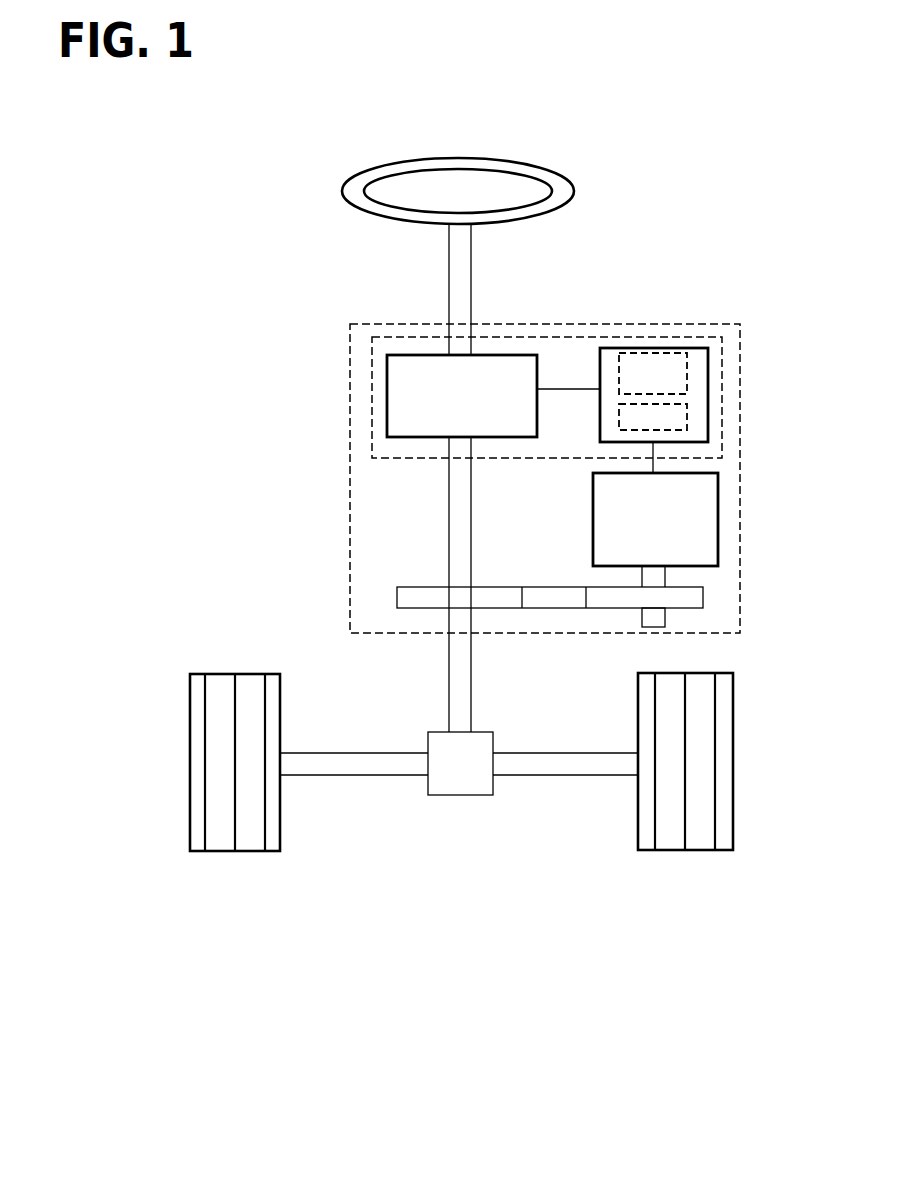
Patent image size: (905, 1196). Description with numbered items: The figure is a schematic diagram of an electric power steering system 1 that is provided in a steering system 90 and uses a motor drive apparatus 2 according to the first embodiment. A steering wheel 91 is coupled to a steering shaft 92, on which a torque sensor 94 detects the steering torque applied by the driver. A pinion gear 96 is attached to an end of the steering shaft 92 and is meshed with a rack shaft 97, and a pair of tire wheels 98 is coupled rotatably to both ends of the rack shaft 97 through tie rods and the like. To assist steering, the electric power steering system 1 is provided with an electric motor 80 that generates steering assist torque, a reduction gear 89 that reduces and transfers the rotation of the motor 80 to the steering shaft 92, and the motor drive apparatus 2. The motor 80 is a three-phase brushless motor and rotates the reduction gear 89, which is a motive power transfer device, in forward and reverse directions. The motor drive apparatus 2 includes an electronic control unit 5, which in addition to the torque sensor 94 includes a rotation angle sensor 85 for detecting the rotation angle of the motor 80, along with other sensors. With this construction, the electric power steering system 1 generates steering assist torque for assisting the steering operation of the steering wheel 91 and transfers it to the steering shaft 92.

The electric power steering system 1 is at (641, 324).
The motor drive apparatus 2 is at (579, 337).
The electronic control unit (ECU) 5 is at (687, 368).
The rotation angle sensor 85 is at (687, 412).
The electric motor 80 is at (718, 498).
The reduction gear 89 is at (703, 597).
The steering system 90 is at (413, 893).
The steering wheel 91 is at (343, 191).
The steering shaft 92 is at (448, 287).
The torque sensor 94 is at (387, 391).
The pinion gear 96 is at (452, 795).
The rack shaft 97 is at (347, 775).
The tire wheels 98 is at (250, 851).